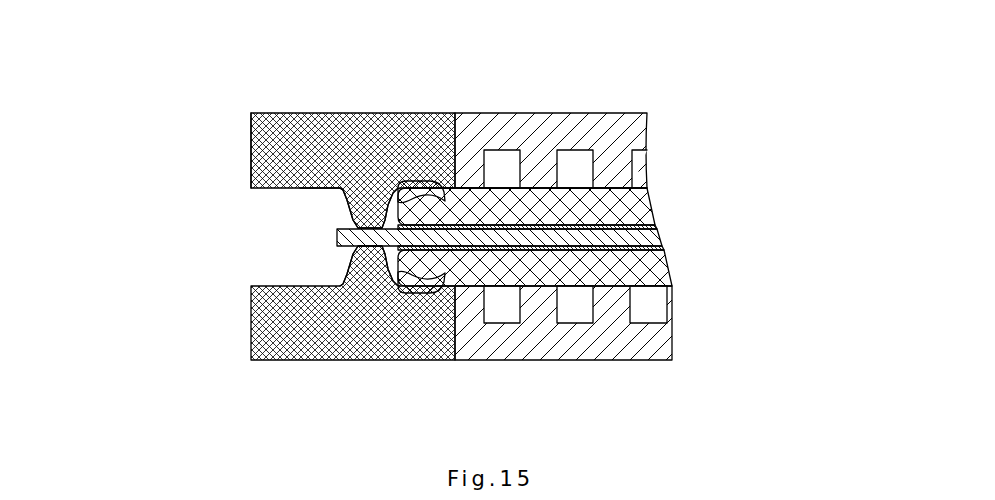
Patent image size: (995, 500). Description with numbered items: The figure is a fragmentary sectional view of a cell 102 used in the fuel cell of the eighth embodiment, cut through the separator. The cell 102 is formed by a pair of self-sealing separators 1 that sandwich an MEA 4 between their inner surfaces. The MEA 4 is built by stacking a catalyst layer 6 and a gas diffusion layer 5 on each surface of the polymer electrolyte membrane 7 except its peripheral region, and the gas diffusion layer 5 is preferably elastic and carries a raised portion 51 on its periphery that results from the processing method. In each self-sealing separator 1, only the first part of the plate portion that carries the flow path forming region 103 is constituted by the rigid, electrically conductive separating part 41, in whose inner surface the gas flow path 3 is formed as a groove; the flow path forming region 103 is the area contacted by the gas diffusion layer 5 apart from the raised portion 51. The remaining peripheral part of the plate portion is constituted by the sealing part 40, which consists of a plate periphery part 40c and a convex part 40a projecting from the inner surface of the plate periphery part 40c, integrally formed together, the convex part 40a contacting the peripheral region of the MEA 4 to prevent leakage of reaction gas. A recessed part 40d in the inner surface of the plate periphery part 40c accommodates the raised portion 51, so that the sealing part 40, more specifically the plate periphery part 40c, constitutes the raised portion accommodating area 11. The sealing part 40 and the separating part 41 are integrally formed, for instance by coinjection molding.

The self-sealing separator 1 is at (598, 111).
The gas flow path 3 is at (568, 153).
The MEA 4 is at (735, 177).
The gas diffusion layer 5 is at (652, 212).
The catalyst layer 6 is at (658, 228).
The polymer electrolyte membrane 7 is at (337, 237).
The raised portion accommodating area 11 is at (256, 244).
The sealing part 40 is at (148, 104).
The convex part 40a is at (347, 210).
The plate periphery part 40c is at (251, 130).
The recessed part 40d is at (380, 190).
The separating part 41 is at (647, 133).
The raised portion 51 is at (431, 185).
The cell 102 is at (245, 92).
The flow path forming region 103 is at (537, 194).